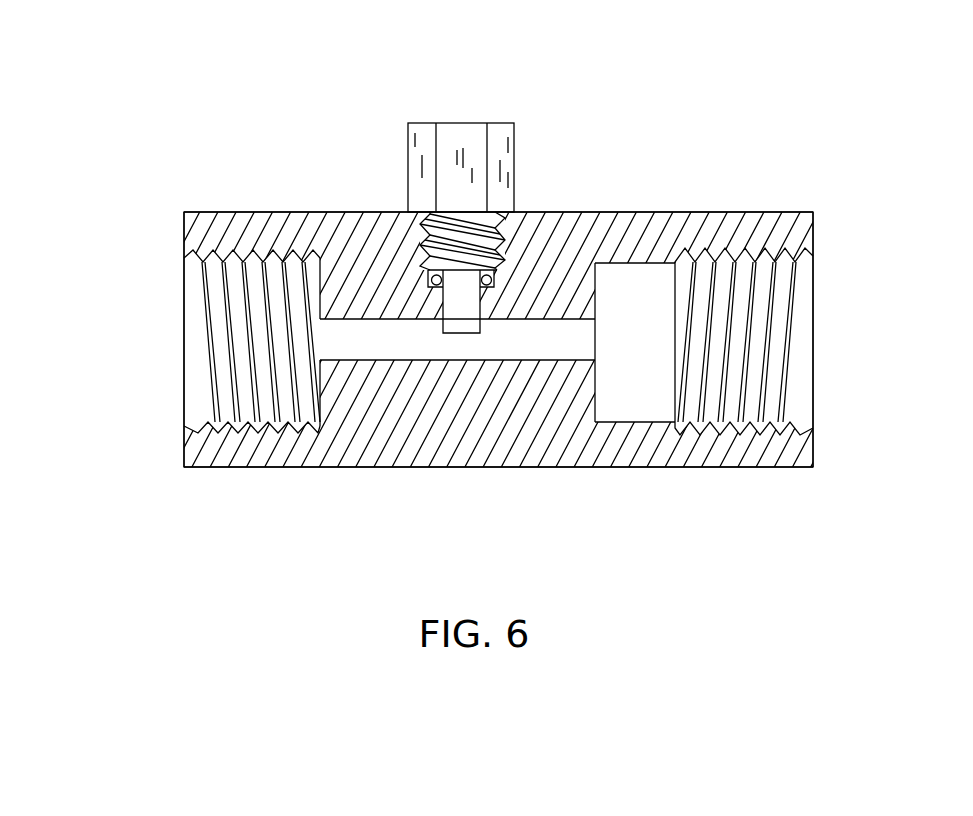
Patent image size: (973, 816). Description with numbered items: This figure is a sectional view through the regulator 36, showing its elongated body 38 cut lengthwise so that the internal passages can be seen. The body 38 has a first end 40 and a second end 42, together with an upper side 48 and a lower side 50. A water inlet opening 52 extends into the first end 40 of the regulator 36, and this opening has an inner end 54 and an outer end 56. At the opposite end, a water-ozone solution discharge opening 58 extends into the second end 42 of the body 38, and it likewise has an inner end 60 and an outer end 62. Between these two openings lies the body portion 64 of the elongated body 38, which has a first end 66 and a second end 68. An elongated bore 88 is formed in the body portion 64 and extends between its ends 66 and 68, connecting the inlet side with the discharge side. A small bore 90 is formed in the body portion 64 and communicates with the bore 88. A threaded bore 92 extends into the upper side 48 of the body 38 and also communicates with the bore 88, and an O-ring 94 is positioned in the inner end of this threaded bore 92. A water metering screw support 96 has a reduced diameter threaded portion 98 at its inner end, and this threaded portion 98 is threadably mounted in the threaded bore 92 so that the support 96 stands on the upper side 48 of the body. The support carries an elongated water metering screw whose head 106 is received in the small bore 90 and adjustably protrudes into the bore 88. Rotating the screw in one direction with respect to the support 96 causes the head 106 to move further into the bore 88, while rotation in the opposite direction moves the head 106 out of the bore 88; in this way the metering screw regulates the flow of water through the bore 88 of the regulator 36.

The regulator 36 is at (651, 169).
The elongated body 38 is at (314, 212).
The first end 40 is at (182, 230).
The second end 42 is at (822, 225).
The upper side 48 is at (703, 212).
The lower side 50 is at (540, 468).
The water inlet opening 52 is at (203, 338).
The inner end 54 is at (320, 393).
The outer end 56 is at (183, 290).
The water-ozone solution discharge opening 58 is at (822, 302).
The inner end 60 is at (595, 410).
The outer end 62 is at (813, 355).
The body portion 64 is at (593, 243).
The first end 66 is at (322, 300).
The second end 68 is at (595, 403).
The elongated bore 88 is at (511, 347).
The small bore 90 is at (440, 300).
The threaded bore 92 is at (492, 278).
The O-ring 94 is at (500, 270).
The water metering screw support 96 is at (483, 118).
The reduced diameter threaded portion 98 is at (452, 230).
The head 106 is at (460, 313).